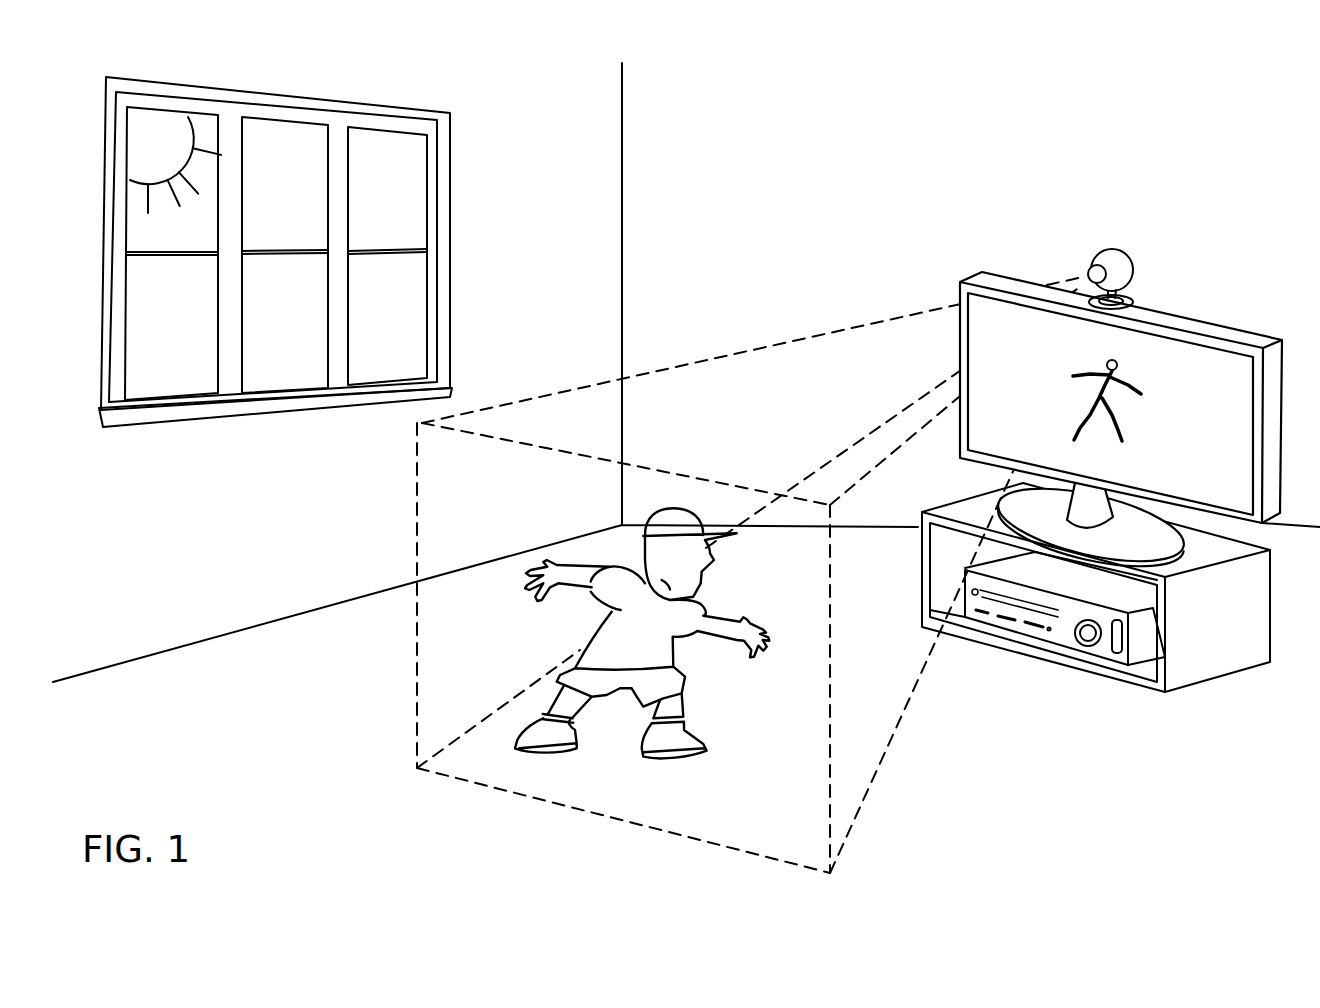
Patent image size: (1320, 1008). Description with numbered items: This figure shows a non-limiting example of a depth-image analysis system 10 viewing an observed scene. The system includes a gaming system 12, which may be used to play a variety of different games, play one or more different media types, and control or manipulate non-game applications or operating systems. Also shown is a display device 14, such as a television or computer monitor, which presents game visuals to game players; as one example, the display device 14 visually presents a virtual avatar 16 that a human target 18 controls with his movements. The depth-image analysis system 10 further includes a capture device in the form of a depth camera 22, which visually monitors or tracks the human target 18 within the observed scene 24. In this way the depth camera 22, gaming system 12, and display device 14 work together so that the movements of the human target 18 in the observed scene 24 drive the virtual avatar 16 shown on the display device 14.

The depth-image analysis system 10 is at (710, 333).
The gaming system 12 is at (1065, 643).
The display device 14 is at (1249, 381).
The virtual avatar 16 is at (1122, 362).
The human target 18 is at (644, 653).
The depth camera 22 is at (1127, 255).
The observed scene 24 is at (491, 478).